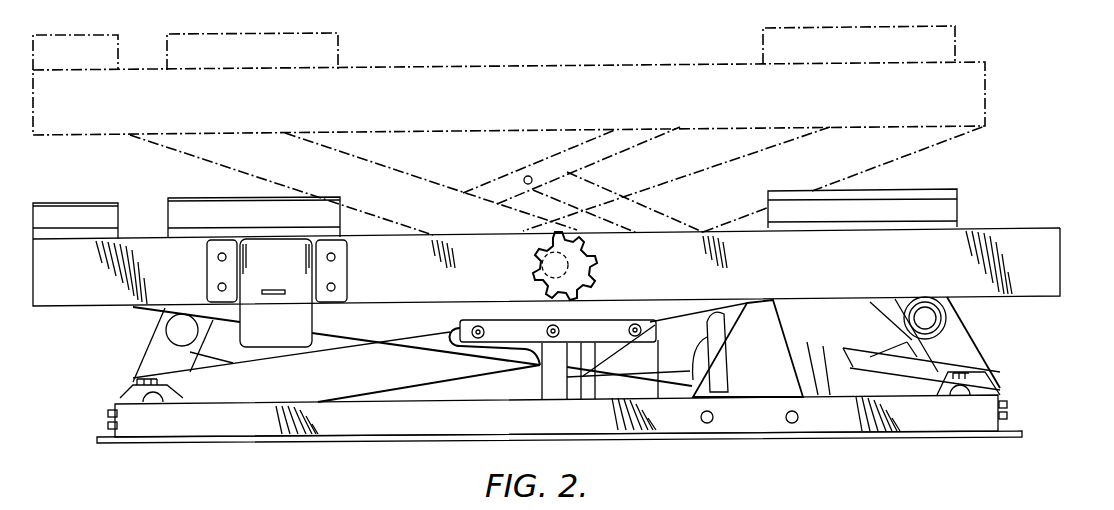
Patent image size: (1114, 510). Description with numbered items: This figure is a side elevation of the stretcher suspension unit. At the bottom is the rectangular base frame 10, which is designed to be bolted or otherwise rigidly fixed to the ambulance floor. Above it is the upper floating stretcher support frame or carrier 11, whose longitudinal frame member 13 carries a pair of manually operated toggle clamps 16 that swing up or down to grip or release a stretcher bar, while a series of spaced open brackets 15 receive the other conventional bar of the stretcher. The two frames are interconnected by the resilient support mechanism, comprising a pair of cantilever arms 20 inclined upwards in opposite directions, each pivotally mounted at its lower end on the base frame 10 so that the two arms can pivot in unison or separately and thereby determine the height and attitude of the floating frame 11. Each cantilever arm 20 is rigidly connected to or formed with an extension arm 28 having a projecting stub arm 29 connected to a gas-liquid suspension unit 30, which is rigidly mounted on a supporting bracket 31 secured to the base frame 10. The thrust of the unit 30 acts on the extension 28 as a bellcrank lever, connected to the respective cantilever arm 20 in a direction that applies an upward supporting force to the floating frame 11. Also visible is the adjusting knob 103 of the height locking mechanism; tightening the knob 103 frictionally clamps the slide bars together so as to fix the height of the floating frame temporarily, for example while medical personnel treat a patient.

The base frame 10 is at (378, 425).
The floating stretcher support frame 11 is at (62, 287).
The longitudinal frame member 13 is at (432, 248).
The open brackets 15 is at (78, 212).
The toggle clamps 16 is at (288, 270).
The cantilever arms 20 is at (422, 337).
The extension arm 28 is at (163, 357).
The stub arm 29 is at (177, 332).
The gas-liquid suspension unit 30 is at (835, 365).
The supporting bracket 31 is at (750, 377).
The adjusting knob 103 is at (580, 268).